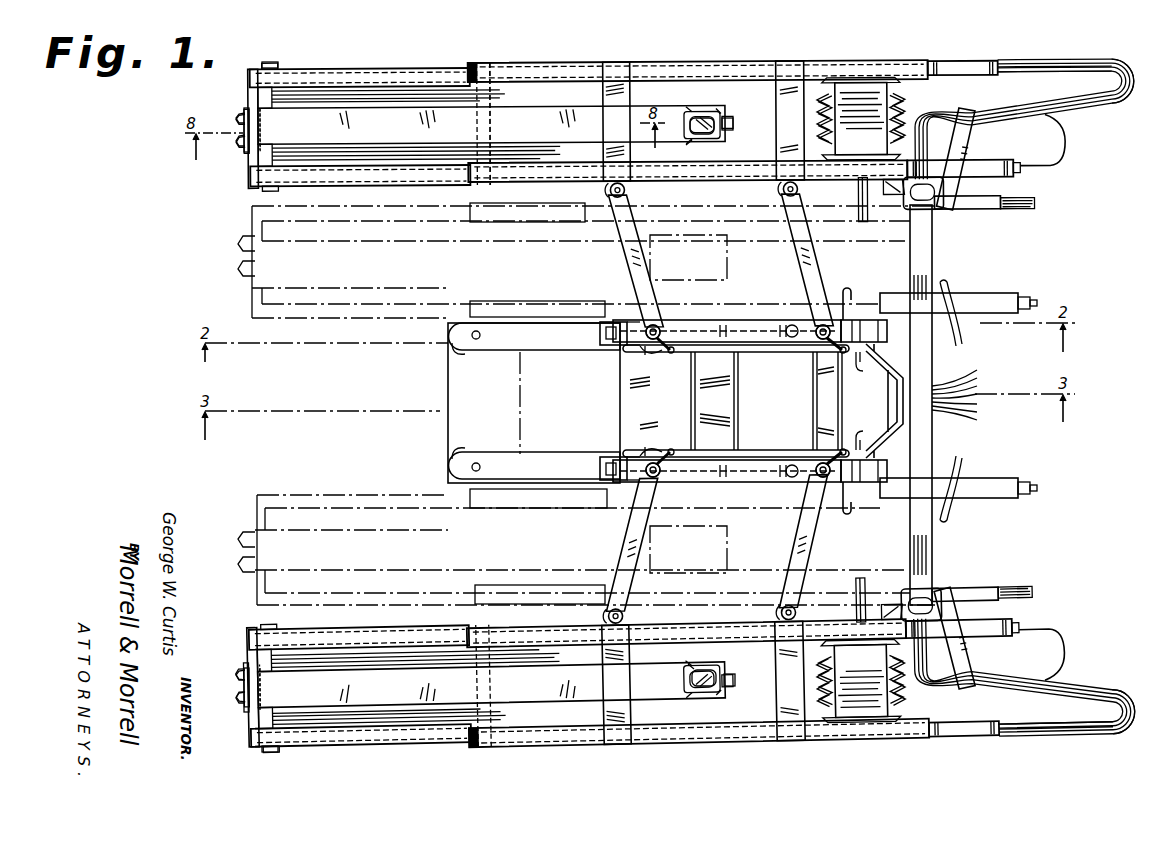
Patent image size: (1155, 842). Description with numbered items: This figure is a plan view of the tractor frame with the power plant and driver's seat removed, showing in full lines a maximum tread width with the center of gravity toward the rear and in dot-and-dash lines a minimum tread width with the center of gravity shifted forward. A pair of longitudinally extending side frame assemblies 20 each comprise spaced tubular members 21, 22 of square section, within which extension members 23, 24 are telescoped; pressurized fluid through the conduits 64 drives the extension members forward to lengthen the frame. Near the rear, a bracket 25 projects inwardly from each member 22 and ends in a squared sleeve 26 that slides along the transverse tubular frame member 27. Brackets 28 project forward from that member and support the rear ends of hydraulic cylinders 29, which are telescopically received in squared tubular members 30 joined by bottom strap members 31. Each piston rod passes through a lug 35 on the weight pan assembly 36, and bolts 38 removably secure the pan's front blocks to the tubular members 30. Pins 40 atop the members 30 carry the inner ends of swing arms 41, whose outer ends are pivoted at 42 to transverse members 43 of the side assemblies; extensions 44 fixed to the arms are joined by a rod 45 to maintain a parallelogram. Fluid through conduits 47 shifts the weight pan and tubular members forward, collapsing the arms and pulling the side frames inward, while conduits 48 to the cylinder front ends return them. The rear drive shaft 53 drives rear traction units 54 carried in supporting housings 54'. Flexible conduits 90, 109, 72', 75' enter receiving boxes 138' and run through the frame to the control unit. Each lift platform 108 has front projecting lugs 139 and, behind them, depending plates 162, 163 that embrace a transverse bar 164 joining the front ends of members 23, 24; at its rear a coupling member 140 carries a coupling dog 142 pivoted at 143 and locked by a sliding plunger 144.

The side frame assembly 20 is at (690, 54).
The tubular member 21 is at (748, 62).
The tubular member 22 is at (735, 182).
The extension member 23 is at (346, 69).
The extension member 24 is at (350, 184).
The bracket 25 is at (893, 200).
The squared sleeve 26 is at (940, 212).
The transverse tubular frame member 27 is at (933, 256).
The bracket 28 is at (897, 418).
The hydraulic cylinder 29 is at (868, 318).
The tubular member 30 is at (742, 319).
The bottom strap member 31 is at (716, 405).
The lug 35 is at (645, 349).
The weight pan assembly 36 is at (632, 398).
The bolt 38 is at (612, 320).
The pin 40 is at (657, 326).
The arm 41 is at (645, 258).
The pivot 42 is at (609, 191).
The transverse member 43 is at (704, 402).
The extension 44 is at (669, 353).
The rod 45 is at (758, 354).
The hydraulic conduit 47 is at (864, 368).
The conduit 48 is at (848, 298).
The rear drive shaft 53 is at (861, 226).
The rear traction unit 54 is at (882, 401).
The supporting housing 54' is at (861, 399).
The conduit 64 is at (1052, 166).
The flexible conduit 72' is at (1066, 405).
The flexible conduit 75' is at (1133, 401).
The flexible conduit 90 is at (1087, 62).
The lift platform 108 is at (480, 406).
The flexible conduit 109 is at (1047, 62).
The receiving box 138' is at (512, 111).
The projecting lug 139 is at (245, 112).
The coupling member 140 is at (735, 124).
The coupling dog 142 is at (690, 112).
The pivot 143 is at (700, 141).
The sliding plunger 144 is at (733, 118).
The front plate 162 is at (243, 126).
The plate 163 is at (265, 125).
The transverse bar 164 is at (263, 72).